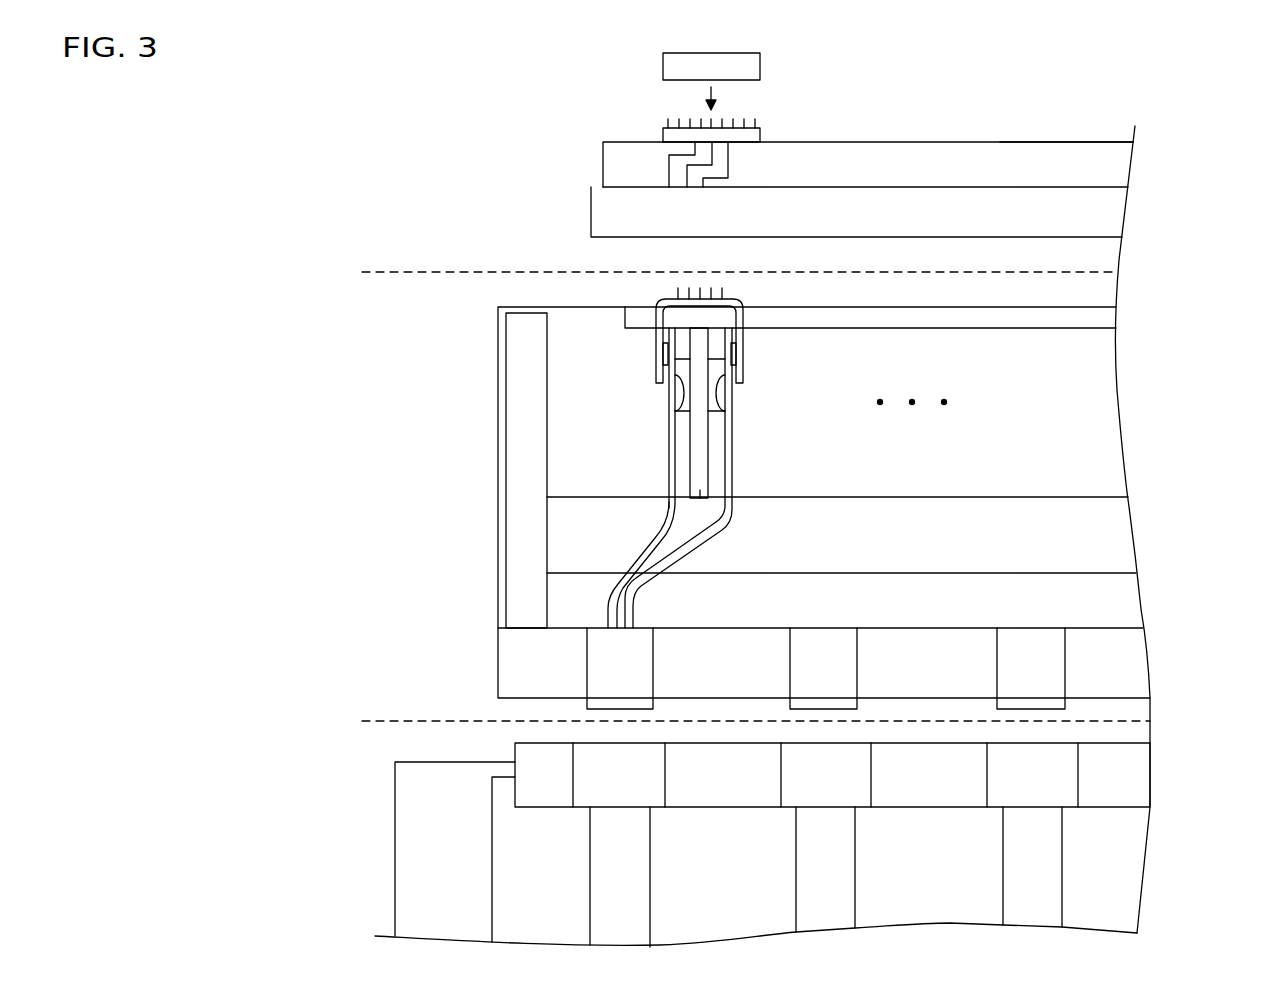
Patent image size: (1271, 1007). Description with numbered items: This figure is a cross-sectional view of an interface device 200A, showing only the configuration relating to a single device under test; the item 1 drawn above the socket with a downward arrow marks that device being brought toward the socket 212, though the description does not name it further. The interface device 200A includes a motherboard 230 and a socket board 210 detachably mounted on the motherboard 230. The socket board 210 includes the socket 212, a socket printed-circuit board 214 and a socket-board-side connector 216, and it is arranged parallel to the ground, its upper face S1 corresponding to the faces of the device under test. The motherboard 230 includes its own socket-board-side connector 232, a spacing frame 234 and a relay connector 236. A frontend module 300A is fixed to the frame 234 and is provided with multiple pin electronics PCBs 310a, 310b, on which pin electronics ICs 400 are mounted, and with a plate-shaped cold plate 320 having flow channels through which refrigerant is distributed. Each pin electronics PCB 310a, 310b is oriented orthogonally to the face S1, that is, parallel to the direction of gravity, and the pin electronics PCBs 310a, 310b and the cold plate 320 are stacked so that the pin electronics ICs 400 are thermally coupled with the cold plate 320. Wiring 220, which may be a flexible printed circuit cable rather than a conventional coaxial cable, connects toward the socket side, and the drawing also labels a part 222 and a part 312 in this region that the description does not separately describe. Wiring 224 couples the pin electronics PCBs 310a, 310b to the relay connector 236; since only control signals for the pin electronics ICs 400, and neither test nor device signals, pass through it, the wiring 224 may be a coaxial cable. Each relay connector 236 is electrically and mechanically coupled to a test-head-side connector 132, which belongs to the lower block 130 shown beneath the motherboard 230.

The light source 1 is at (760, 67).
The face of the socket board S1 is at (1043, 139).
The socket 212 is at (752, 138).
The socket printed-circuit board 214 is at (1108, 165).
The socket-board-side connector 216 is at (1108, 213).
The socket board 210 is at (553, 125).
The interface device 200A is at (262, 123).
The motherboard 230 is at (358, 308).
The socket-board-side connector 232 is at (1102, 318).
The spacing frame 234 is at (1086, 496).
The relay connector 236 is at (1121, 665).
The frontend module 300A is at (1080, 390).
The wiring 220 is at (656, 338).
The holder cap 222 is at (699, 335).
The engaging portion 312 is at (736, 355).
The pin electronics PCB 310a is at (669, 463).
The pin electronics PCB 310b is at (732, 463).
The pin electronics IC 400 is at (672, 422).
The wiring 224 is at (639, 546).
The cold plate 320 is at (702, 490).
The wiring board 130 is at (358, 742).
The test-head-side connector 132 is at (1122, 777).